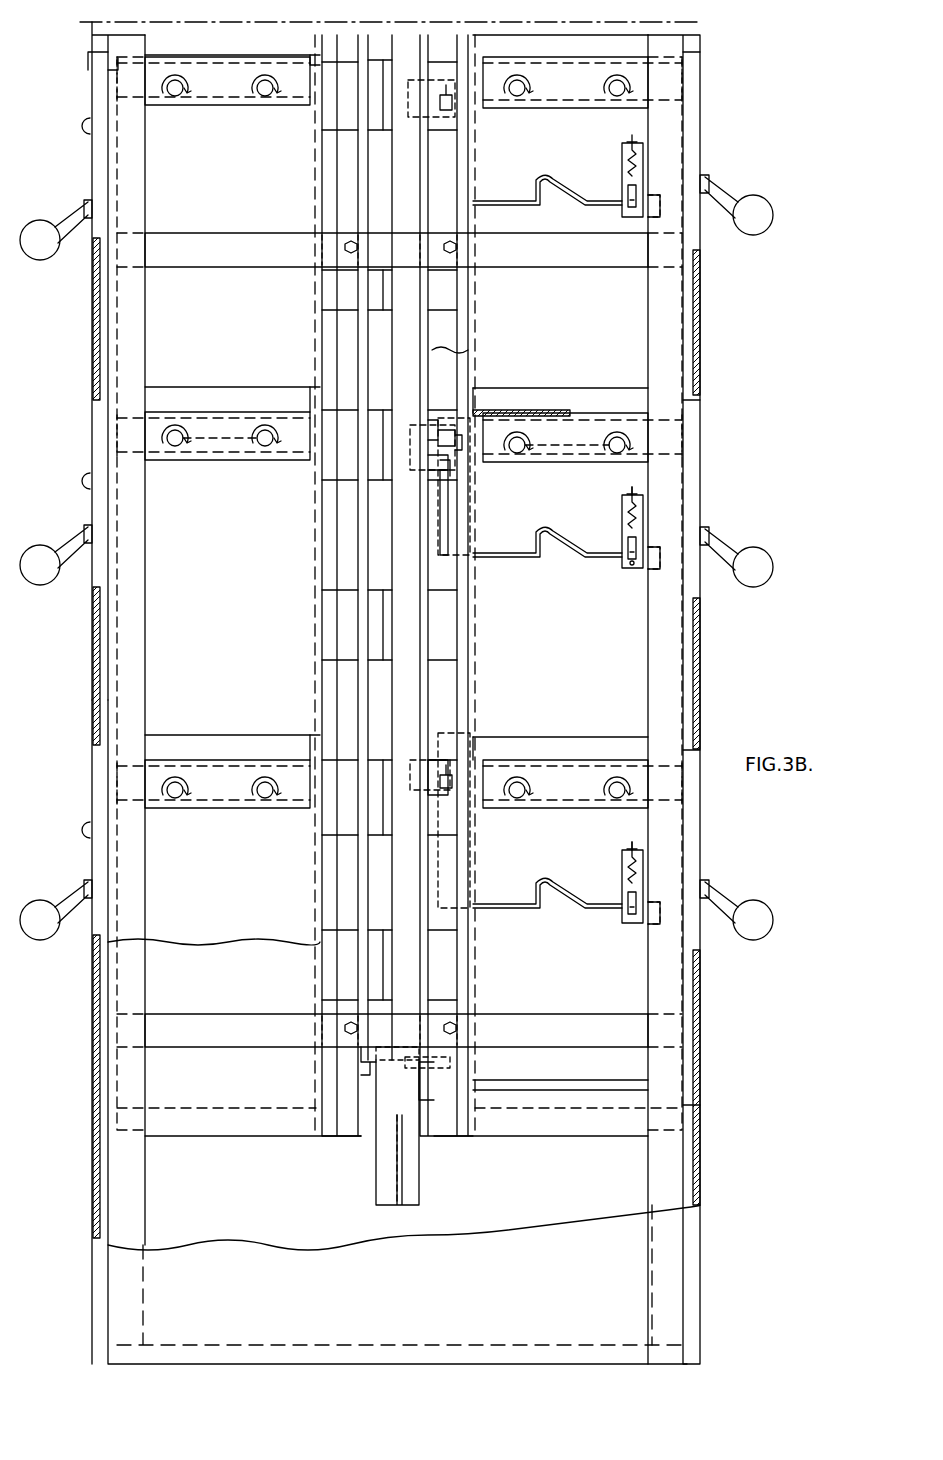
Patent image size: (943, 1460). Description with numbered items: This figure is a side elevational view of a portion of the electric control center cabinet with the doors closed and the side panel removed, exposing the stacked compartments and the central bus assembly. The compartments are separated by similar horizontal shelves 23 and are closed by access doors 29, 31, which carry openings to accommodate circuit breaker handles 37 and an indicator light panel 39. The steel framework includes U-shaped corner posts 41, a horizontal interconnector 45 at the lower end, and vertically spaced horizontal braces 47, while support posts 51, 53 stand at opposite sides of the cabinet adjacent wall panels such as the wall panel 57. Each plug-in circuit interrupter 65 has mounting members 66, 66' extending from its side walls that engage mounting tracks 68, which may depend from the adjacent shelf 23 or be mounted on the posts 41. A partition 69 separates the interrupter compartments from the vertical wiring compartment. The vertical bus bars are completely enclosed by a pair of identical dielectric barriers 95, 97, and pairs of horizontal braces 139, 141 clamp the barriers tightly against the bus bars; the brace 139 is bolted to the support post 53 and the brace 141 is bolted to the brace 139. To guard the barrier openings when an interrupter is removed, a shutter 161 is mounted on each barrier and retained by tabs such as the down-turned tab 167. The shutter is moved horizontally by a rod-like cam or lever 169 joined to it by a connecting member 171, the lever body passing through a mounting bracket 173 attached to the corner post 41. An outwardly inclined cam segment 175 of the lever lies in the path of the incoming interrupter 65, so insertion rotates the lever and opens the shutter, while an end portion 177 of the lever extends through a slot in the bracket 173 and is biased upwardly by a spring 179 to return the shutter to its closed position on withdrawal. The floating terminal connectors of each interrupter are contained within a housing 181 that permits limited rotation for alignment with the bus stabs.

The horizontal shelf 23 is at (202, 56).
The access door 29 is at (92, 318).
The access door 31 is at (92, 681).
The handle 37 is at (70, 540).
The indicator light panel 39 is at (90, 468).
The U-shaped corner post 41 is at (137, 350).
The horizontal interconnector 45 is at (490, 1345).
The horizontal brace 47 is at (220, 245).
The support post 51 is at (445, 312).
The support post 53 is at (345, 612).
The wall panel 57 is at (630, 1300).
The circuit interrupter 65 is at (399, 593).
The mounting member 66 is at (352, 436).
The mounting member 66' is at (444, 436).
The mounting track 68 is at (235, 455).
The partition 69 is at (248, 942).
The barrier 95 is at (390, 170).
The barrier 97 is at (430, 1080).
The horizontal brace 139 is at (376, 1078).
The horizontal brace 141 is at (412, 1055).
The shutter 161 is at (440, 472).
The down-turned tab 167 is at (462, 735).
The cam or lever 169 is at (450, 532).
The connecting member 171 is at (442, 428).
The mounting bracket 173 is at (620, 162).
The cam segment 175 is at (555, 182).
The end portion 177 is at (628, 566).
The spring 179 is at (640, 515).
The housing 181 is at (340, 128).